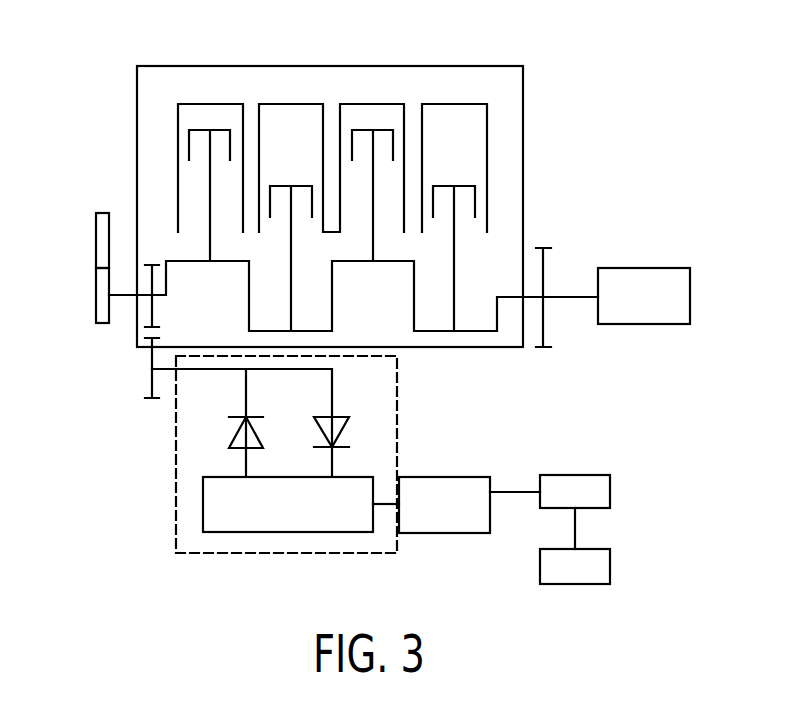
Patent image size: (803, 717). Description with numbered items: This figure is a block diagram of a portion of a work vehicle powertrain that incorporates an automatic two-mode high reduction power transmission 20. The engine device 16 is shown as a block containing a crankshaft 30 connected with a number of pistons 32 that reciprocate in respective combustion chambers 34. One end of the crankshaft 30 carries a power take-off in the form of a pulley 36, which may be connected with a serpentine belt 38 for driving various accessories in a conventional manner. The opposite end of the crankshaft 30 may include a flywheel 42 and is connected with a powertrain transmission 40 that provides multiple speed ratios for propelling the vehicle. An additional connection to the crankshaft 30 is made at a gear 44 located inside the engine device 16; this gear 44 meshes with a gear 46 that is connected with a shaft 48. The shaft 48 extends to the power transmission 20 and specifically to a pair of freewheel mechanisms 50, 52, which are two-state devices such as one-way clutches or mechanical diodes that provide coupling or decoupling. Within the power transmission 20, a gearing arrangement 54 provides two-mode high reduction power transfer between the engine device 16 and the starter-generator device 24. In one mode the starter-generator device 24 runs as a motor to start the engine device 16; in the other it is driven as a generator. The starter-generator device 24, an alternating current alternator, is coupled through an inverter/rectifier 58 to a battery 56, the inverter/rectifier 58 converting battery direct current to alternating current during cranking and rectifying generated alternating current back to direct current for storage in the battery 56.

The engine device 16 is at (333, 66).
The power transmission 20 is at (418, 420).
The starter-generator device 24 is at (431, 519).
The crankshaft 30 is at (249, 311).
The pistons 32 is at (307, 185).
The combustion chambers 34 is at (262, 130).
The pulley 36 is at (96, 300).
The serpentine belt 38 is at (96, 243).
The powertrain transmission 40 is at (630, 311).
The flywheel 42 is at (546, 272).
The gear 44 is at (150, 278).
The gear 46 is at (150, 385).
The shaft 48 is at (210, 370).
The freewheel mechanism 50 is at (344, 431).
The freewheel mechanism 52 is at (262, 430).
The gearing arrangement 54 is at (274, 519).
The battery 56 is at (561, 581).
The inverter/rectifier 58 is at (561, 505).